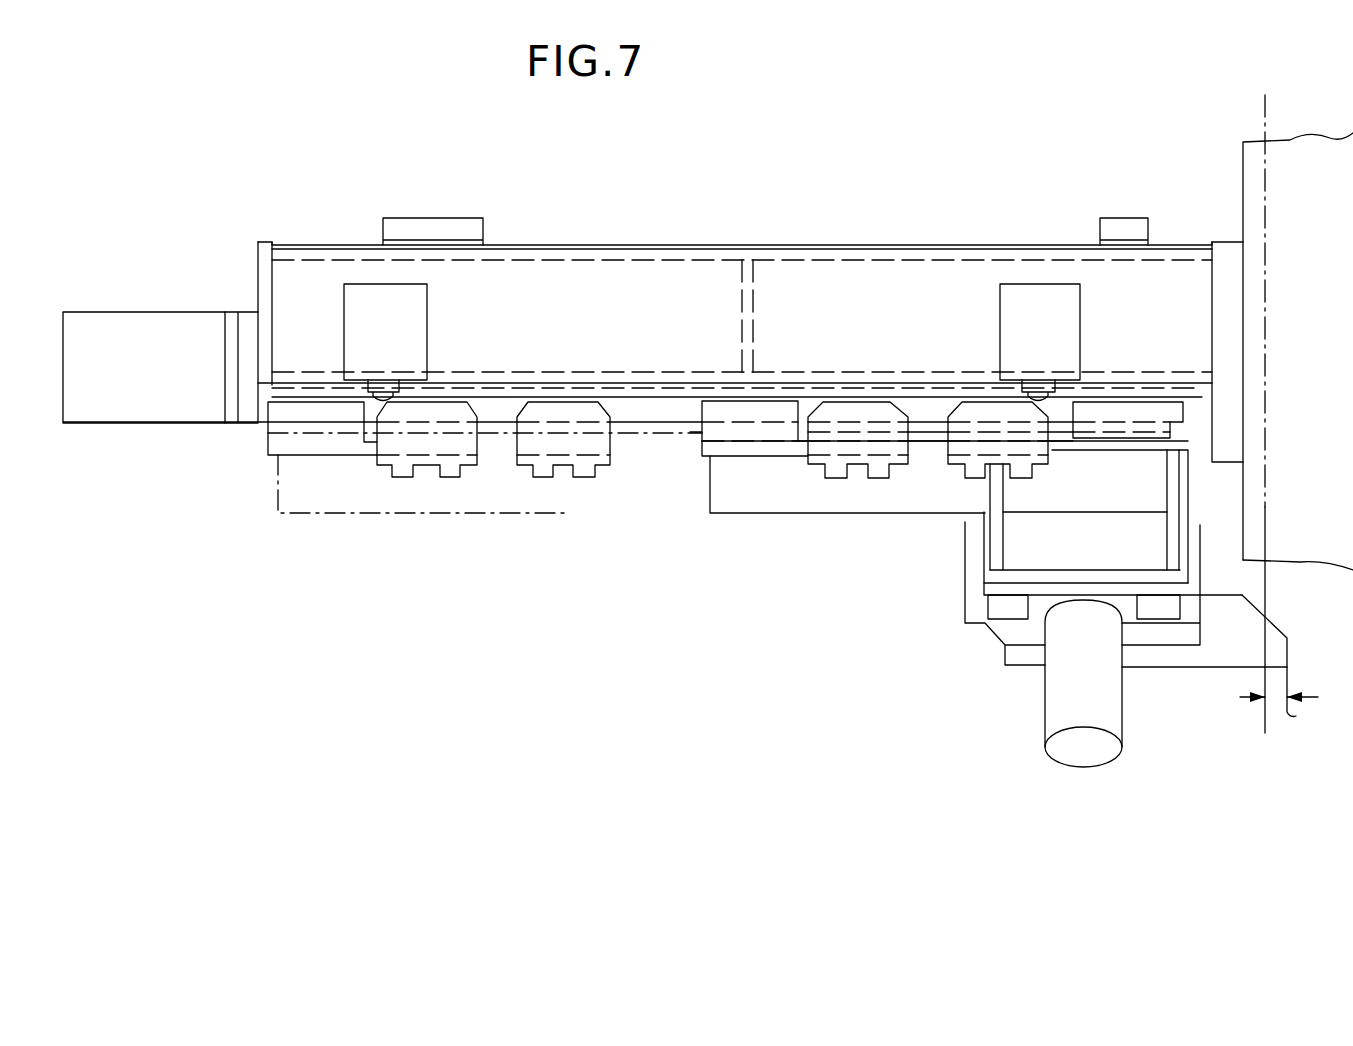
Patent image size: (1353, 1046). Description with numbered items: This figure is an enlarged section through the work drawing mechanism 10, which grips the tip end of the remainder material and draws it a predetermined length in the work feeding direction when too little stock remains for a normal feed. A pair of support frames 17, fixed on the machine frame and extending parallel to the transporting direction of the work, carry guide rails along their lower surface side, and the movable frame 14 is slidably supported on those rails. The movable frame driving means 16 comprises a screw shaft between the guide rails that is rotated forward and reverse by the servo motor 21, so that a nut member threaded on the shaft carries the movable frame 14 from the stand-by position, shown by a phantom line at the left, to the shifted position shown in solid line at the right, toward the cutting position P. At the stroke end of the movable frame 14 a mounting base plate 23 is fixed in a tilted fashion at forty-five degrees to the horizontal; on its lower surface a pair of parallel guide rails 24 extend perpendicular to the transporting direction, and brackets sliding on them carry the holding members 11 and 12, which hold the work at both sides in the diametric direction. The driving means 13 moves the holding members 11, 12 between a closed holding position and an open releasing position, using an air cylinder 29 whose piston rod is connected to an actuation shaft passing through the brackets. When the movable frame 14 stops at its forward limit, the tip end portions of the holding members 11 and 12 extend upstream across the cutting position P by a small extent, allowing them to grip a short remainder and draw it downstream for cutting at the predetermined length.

The work drawing mechanism 10 is at (810, 205).
The support frames 17 is at (847, 282).
The servo motor 21 is at (163, 383).
The movable frame driving means 16 is at (232, 443).
The movable frame 14 is at (355, 525).
The mounting base plate 23 is at (985, 576).
The driving means 13 is at (952, 636).
The guide rails 24 is at (1005, 612).
The air cylinder 29 is at (1062, 702).
The holding member 12 is at (1218, 687).
The holding member 11 is at (1237, 647).
The cutting position P is at (1266, 357).